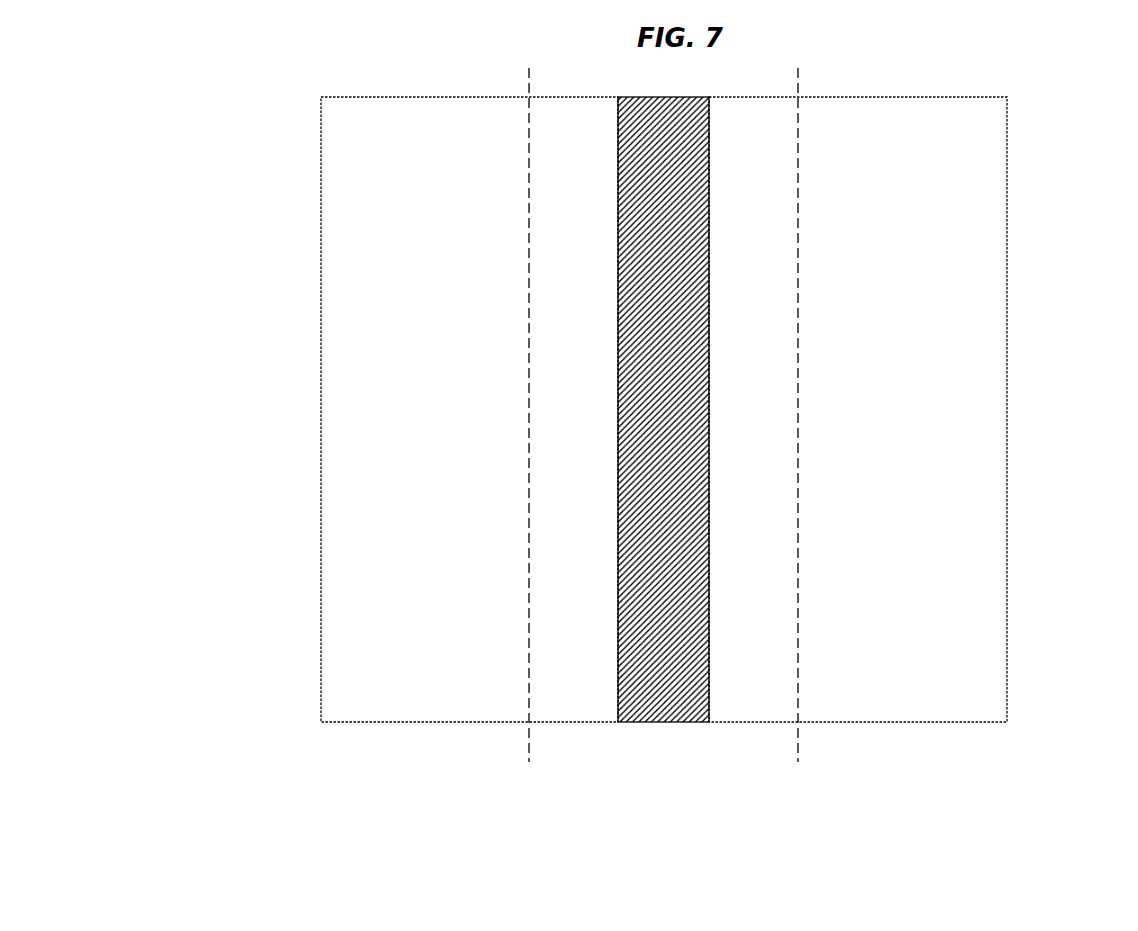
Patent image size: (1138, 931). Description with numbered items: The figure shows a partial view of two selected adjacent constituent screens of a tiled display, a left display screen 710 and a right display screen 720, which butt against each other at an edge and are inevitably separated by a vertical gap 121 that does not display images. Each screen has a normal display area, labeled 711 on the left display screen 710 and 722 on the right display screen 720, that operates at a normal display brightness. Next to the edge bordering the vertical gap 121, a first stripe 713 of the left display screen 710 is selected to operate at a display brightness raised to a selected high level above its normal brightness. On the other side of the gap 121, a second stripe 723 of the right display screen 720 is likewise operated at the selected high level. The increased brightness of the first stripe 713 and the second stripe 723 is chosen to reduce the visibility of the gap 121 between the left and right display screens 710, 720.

The left display screen 710 is at (321, 217).
The right display screen 720 is at (1007, 470).
The normal display area (left screen) 711 is at (425, 409).
The normal display area (right screen) 722 is at (902, 409).
The first stripe 713 is at (573, 415).
The second stripe 723 is at (752, 415).
The vertical gap 121 is at (663, 710).